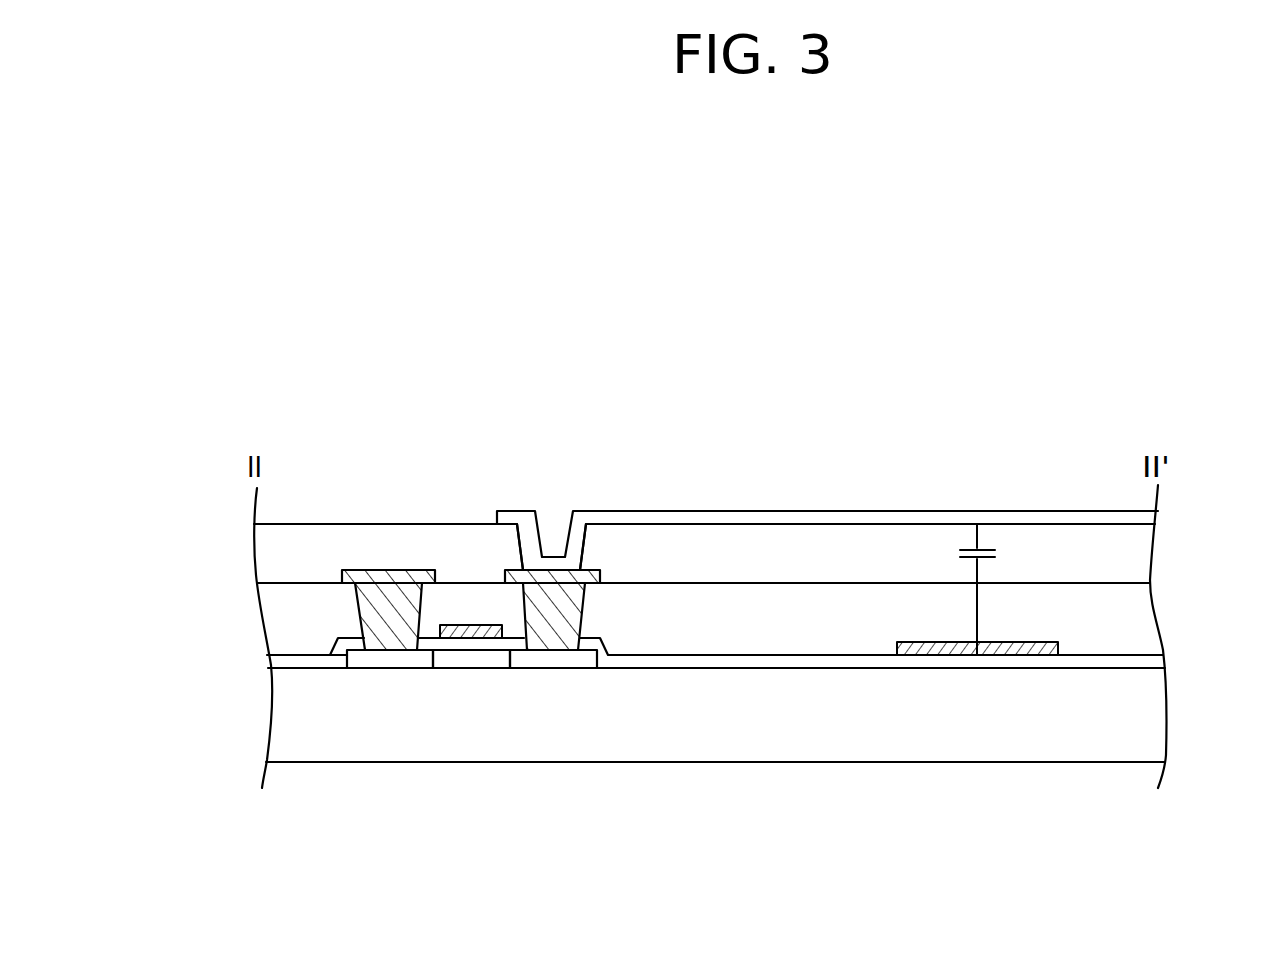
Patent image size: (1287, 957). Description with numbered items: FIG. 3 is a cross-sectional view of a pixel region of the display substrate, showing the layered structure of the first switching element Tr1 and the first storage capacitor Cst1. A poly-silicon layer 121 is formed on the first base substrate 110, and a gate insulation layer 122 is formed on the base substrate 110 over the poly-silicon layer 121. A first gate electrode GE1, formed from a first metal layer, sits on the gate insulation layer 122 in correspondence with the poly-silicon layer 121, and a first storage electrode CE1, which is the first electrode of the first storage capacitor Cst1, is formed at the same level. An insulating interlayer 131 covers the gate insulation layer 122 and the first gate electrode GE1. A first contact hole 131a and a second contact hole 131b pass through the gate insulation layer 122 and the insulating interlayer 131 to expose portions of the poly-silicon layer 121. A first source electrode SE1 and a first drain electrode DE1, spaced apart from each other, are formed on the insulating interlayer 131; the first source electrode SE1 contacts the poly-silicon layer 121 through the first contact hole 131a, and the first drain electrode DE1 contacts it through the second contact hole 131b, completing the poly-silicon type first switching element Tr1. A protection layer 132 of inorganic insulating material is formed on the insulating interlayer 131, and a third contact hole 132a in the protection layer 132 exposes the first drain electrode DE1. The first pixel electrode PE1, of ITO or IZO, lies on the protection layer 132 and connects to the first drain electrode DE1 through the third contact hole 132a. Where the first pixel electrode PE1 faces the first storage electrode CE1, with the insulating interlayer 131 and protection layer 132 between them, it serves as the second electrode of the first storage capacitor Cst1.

The first base substrate 110 is at (1143, 715).
The gate insulation layer 122 is at (296, 660).
The poly-silicon layer 121 is at (477, 657).
The first source electrode SE1 is at (390, 630).
The first drain electrode DE1 is at (553, 633).
The first gate electrode GE1 is at (487, 642).
The insulating interlayer 131 is at (1143, 615).
The first contact hole 131a is at (343, 608).
The second contact hole 131b is at (599, 607).
The protection layer 132 is at (1143, 553).
The third contact hole 132a is at (599, 545).
The first pixel electrode PE1 is at (1147, 517).
The first storage electrode CE1 is at (977, 655).
The first storage capacitor Cst1 is at (1009, 589).
The first switching element Tr1 is at (625, 836).